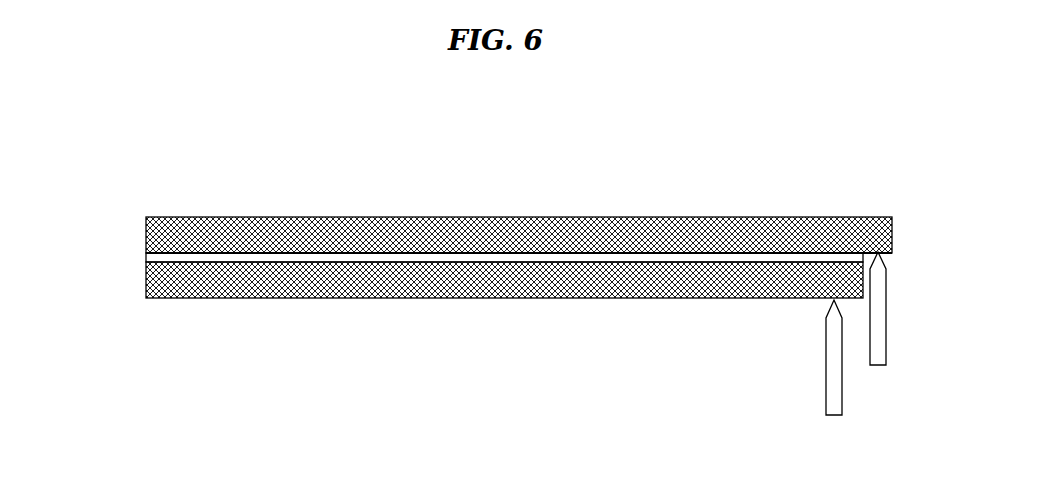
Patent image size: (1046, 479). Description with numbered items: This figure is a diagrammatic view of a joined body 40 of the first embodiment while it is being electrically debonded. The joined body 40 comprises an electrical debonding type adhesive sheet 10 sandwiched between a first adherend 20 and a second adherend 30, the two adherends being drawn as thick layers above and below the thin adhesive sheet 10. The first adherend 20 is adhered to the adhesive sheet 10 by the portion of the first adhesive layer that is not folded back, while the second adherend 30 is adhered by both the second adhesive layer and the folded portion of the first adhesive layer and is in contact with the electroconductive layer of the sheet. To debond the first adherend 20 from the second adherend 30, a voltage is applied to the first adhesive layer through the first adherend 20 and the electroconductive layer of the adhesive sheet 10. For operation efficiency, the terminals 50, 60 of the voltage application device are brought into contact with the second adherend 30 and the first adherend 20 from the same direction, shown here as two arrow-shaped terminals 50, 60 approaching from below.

The electrical debonding type adhesive sheet 10 is at (145, 258).
The first adherend 20 is at (145, 223).
The second adherend 30 is at (145, 298).
The joined body 40 is at (310, 150).
The terminal 50 is at (826, 397).
The terminal 60 is at (886, 347).